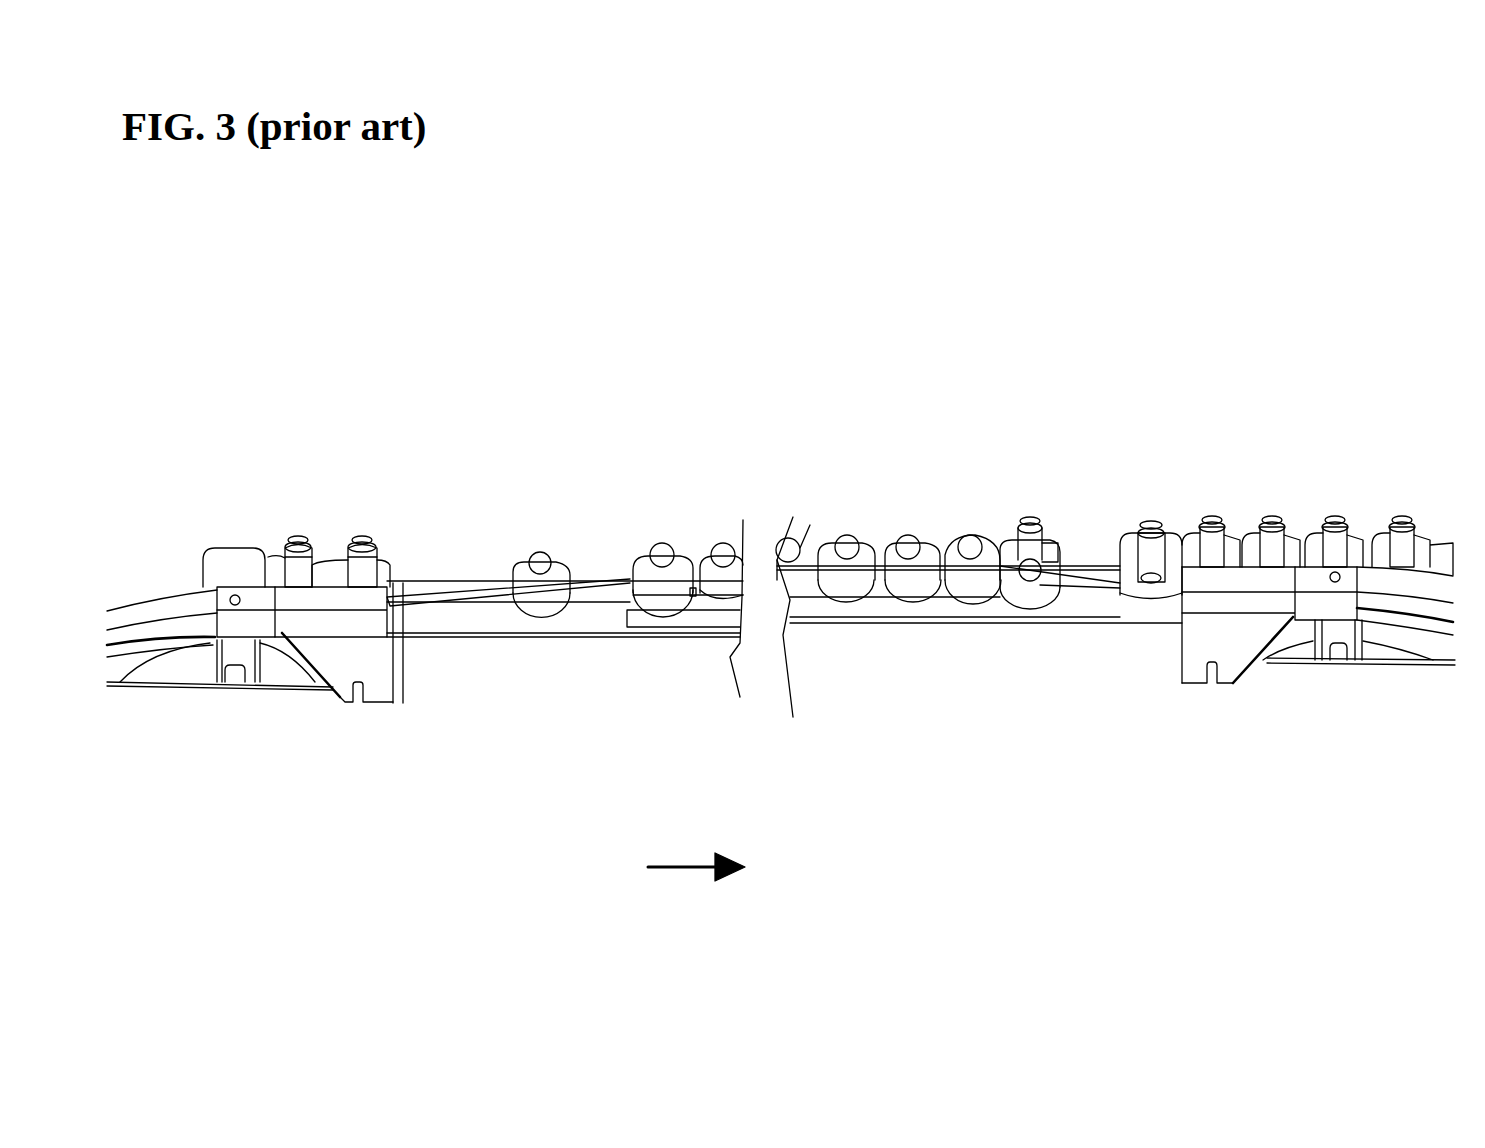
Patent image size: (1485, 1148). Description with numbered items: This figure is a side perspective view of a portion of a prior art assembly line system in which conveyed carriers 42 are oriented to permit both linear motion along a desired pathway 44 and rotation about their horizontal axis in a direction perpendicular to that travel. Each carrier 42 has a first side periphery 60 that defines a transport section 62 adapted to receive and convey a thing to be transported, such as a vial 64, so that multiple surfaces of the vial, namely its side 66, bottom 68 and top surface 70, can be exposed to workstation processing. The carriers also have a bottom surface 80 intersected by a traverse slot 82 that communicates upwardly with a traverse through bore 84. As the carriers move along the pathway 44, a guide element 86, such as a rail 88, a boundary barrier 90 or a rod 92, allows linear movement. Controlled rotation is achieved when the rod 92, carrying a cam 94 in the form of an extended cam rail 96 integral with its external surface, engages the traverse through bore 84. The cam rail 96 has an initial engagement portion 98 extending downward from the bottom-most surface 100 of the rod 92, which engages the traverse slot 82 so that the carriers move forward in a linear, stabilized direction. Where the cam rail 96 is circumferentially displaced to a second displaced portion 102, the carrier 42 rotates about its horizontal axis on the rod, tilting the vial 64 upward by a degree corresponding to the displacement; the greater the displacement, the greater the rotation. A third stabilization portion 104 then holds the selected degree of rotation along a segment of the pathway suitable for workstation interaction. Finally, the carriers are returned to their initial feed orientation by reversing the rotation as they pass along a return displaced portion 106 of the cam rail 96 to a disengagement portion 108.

The carrier 42 is at (372, 567).
The desired pathway 44 is at (681, 867).
The first side periphery 60 is at (313, 573).
The transport section 62 is at (283, 550).
The vial 64 is at (285, 547).
The side 66 is at (1037, 543).
The bottom 68 is at (1036, 600).
The top surface 70 is at (540, 562).
The bottom surface 80 is at (1030, 600).
The traverse slot 82 is at (568, 597).
The traverse through bore 84 is at (520, 580).
The guide element 86 is at (320, 625).
The rail 88 is at (1152, 575).
The boundary barrier 90 is at (378, 600).
The rod 92 is at (433, 580).
The cam 94 is at (423, 600).
The extended cam rail 96 is at (402, 605).
The initial engagement portion 98 is at (401, 600).
The bottom-most surface 100 is at (393, 600).
The second displaced portion 102 is at (570, 593).
The third stabilization portion 104 is at (693, 595).
The return displaced portion 106 is at (937, 580).
The disengagement portion 108 is at (1098, 572).